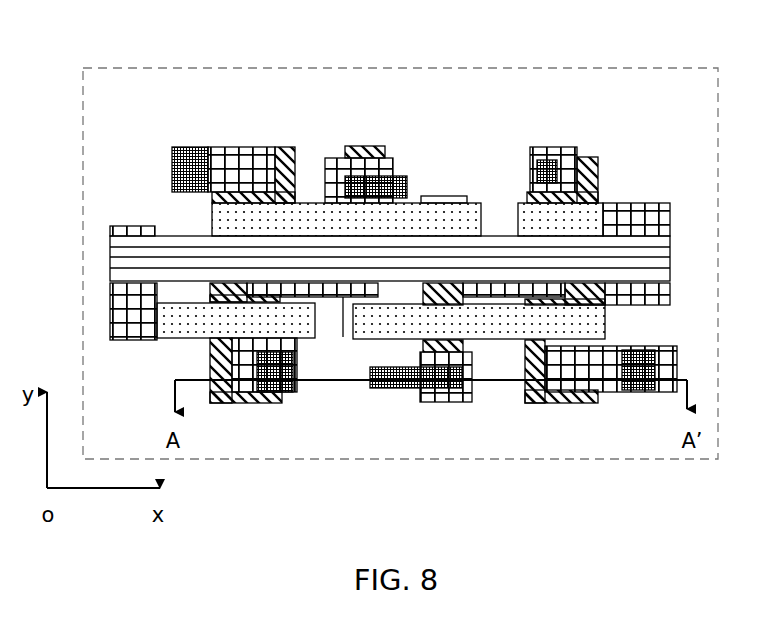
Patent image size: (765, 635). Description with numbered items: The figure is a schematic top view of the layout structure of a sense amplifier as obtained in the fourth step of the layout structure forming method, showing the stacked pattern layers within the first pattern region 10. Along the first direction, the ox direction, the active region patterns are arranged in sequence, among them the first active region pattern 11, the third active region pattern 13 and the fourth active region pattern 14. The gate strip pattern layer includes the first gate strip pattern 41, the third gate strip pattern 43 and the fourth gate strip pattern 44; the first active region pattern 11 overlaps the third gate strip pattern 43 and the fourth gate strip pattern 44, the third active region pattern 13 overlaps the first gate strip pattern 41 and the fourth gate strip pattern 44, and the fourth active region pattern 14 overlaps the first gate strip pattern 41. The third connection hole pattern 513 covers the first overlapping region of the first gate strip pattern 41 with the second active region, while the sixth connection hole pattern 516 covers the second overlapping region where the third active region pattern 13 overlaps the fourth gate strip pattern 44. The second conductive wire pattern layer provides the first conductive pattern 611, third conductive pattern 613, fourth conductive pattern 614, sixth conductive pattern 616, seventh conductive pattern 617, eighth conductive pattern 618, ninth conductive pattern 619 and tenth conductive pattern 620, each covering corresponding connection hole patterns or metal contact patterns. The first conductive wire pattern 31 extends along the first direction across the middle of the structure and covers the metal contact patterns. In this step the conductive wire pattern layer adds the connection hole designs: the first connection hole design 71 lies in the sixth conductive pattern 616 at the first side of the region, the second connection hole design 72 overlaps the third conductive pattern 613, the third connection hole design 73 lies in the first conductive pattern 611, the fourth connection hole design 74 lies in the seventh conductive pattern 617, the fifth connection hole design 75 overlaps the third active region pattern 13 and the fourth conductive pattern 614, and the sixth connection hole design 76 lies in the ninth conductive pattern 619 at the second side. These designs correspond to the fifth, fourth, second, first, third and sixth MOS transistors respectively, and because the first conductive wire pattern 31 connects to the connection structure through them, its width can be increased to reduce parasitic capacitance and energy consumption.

The first pattern region 10 is at (478, 68).
The first active region pattern 11 is at (590, 158).
The third active region pattern 13 is at (377, 147).
The fourth active region pattern 14 is at (283, 148).
The first conductive wire pattern 31 is at (172, 245).
The first gate strip pattern 41 is at (230, 227).
The third gate strip pattern 43 is at (532, 225).
The fourth gate strip pattern 44 is at (507, 339).
The first connection hole design 71 is at (170, 162).
The second connection hole design 72 is at (408, 390).
The third connection hole design 73 is at (543, 162).
The fourth connection hole design 74 is at (273, 393).
The fifth connection hole design 75 is at (360, 173).
The sixth connection hole design 76 is at (620, 392).
The third connection hole pattern 513 is at (447, 198).
The sixth connection hole pattern 516 is at (348, 332).
The first conductive pattern 611 is at (537, 178).
The third conductive pattern 613 is at (420, 360).
The fourth conductive pattern 614 is at (333, 167).
The sixth conductive pattern 616 is at (225, 150).
The seventh conductive pattern 617 is at (237, 375).
The eighth conductive pattern 618 is at (632, 225).
The ninth conductive pattern 619 is at (643, 393).
The tenth conductive pattern 620 is at (130, 225).